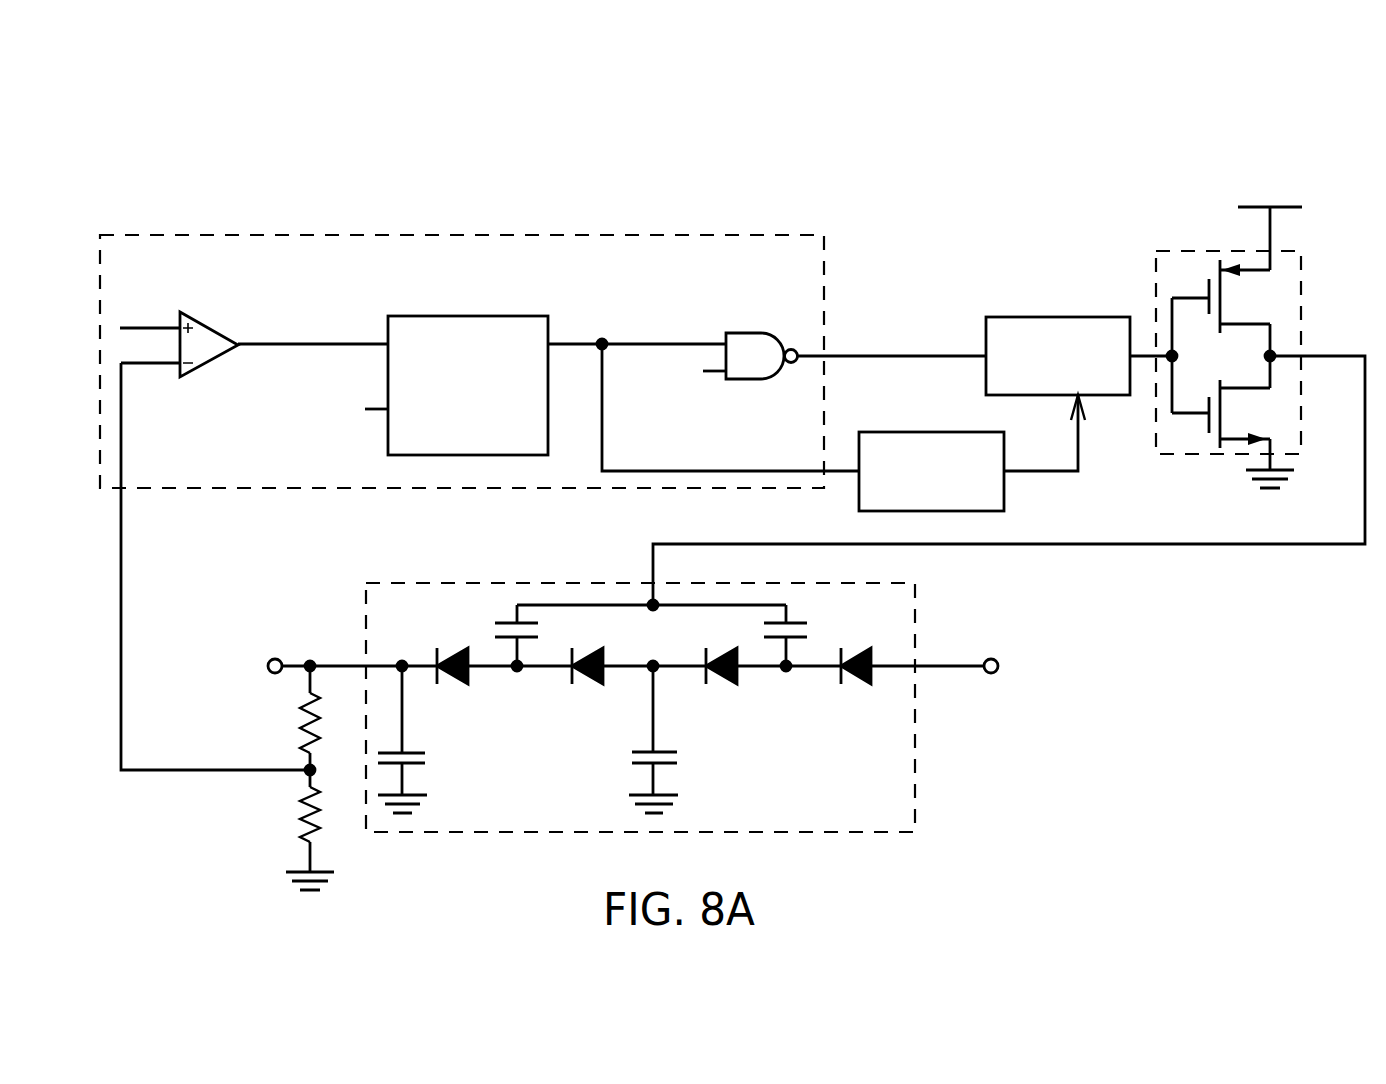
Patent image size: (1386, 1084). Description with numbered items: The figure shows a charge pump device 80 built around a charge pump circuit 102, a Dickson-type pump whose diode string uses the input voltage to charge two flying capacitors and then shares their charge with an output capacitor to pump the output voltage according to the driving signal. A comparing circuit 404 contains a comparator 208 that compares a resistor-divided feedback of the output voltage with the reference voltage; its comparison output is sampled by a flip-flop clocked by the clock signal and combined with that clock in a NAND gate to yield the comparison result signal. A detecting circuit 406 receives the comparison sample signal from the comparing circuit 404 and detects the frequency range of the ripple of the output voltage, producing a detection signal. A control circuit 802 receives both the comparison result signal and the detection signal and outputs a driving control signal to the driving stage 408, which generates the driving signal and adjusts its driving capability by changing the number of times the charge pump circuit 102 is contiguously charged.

The charge pump device 80 is at (1254, 126).
The comparing circuit 404 is at (783, 233).
The comparator 208 is at (185, 311).
The control circuit 802 is at (1074, 315).
The detecting circuit 406 is at (976, 432).
The driving stage 408 is at (1302, 288).
The charge pump circuit 102 is at (915, 622).